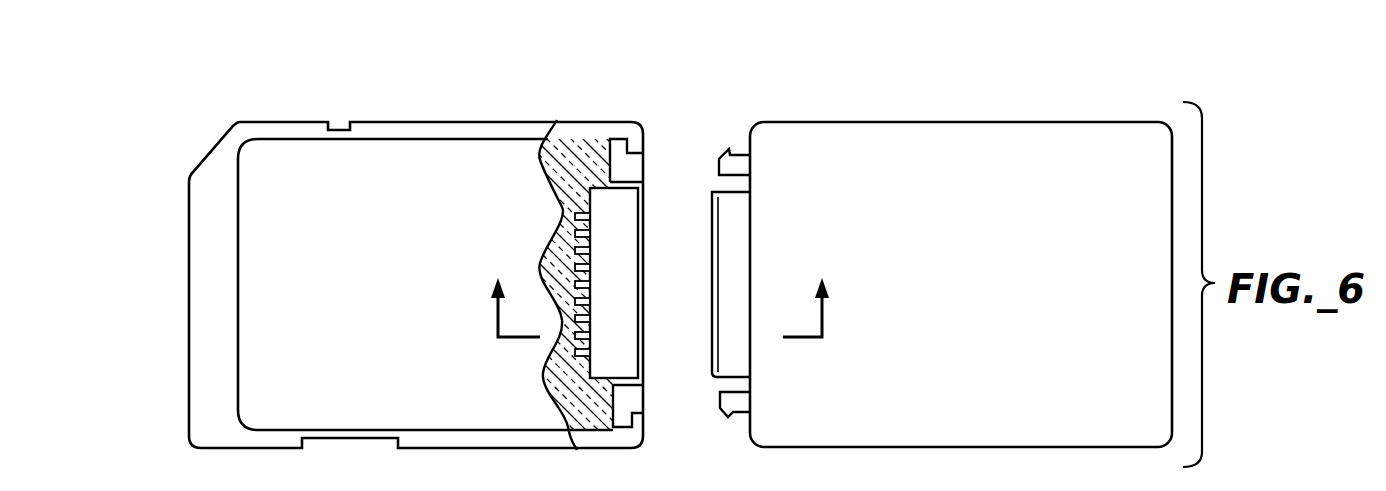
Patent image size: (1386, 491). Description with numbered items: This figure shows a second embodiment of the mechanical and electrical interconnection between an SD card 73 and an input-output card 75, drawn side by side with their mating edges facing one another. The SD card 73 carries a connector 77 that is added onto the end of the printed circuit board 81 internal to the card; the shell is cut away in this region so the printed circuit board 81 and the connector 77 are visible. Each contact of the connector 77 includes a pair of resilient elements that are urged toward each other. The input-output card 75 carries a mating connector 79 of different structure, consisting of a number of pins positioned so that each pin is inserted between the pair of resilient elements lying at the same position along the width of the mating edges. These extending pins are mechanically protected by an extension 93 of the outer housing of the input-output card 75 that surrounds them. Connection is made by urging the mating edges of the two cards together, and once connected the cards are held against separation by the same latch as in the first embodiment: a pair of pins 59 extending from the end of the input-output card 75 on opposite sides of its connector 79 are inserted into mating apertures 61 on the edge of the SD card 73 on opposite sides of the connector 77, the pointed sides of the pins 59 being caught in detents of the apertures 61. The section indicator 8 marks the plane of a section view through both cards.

The SD card 73 is at (430, 104).
The input-output card 75 is at (948, 116).
The mating apertures 61 is at (619, 147).
The pins 59 is at (716, 144).
The connector 77 is at (658, 348).
The mating connector 79 is at (702, 202).
The printed circuit board 81 is at (585, 423).
The extension of the card outer housing 93 is at (733, 287).
The section line FIG. 8 is at (660, 290).